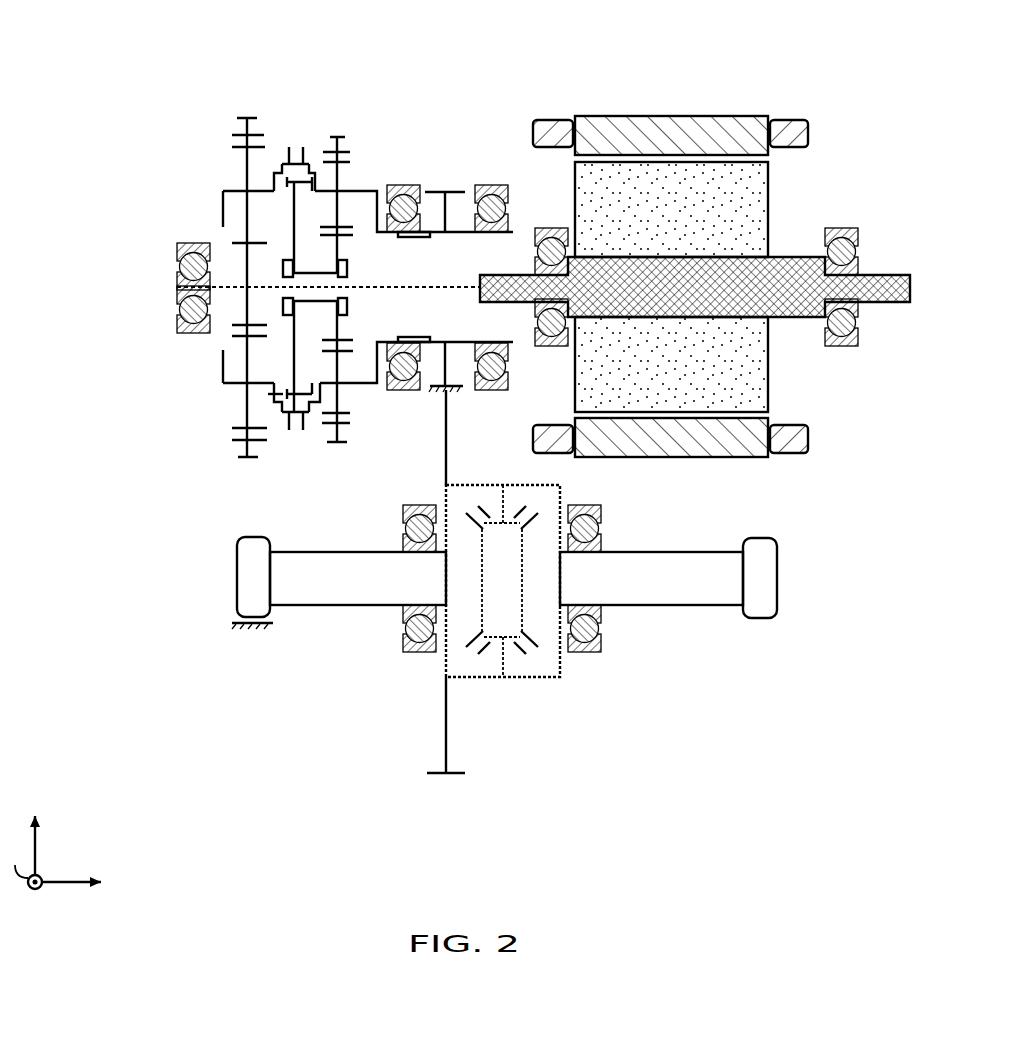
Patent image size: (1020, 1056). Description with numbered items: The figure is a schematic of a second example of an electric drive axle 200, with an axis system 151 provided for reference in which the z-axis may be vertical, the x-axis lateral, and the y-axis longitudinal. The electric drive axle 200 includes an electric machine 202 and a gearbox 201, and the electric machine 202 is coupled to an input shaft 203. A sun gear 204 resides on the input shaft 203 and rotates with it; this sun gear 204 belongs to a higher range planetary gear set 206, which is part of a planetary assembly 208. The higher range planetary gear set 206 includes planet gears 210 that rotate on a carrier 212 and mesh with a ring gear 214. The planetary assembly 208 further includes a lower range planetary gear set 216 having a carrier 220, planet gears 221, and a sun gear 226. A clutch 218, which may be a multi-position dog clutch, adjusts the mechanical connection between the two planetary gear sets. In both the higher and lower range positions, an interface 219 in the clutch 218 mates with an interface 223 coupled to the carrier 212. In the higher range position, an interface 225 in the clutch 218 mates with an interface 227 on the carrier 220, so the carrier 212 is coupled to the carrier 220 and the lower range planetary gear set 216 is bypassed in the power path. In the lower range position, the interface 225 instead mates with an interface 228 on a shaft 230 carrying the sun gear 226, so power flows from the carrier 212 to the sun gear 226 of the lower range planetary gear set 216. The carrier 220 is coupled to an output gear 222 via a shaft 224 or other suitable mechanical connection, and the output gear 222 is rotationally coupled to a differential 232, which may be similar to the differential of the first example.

The electric drive axle 200 is at (77, 67).
The gearbox 201 is at (166, 118).
The electric machine 202 is at (600, 108).
The input shaft 203 is at (424, 287).
The sun gear 204 is at (232, 243).
The higher range planetary gear set 206 is at (248, 100).
The planetary assembly 208 is at (293, 52).
The planet gears 210 is at (231, 146).
The carrier 212 is at (238, 192).
The ring gear 214 is at (256, 135).
The lower range planetary gear set 216 is at (351, 130).
The clutch 218 is at (311, 430).
The interface 219 is at (274, 394).
The carrier 220 is at (361, 190).
The planet gears 221 is at (339, 208).
The output gear 222 is at (451, 191).
The interface 223 is at (269, 190).
The shaft 224 is at (379, 235).
The interface 225 is at (312, 394).
The sun gear 226 is at (319, 232).
The interface 227 is at (312, 173).
The interface 228 is at (290, 428).
The shaft 230 is at (291, 233).
The differential 232 is at (582, 483).
The axis system 151 is at (92, 845).